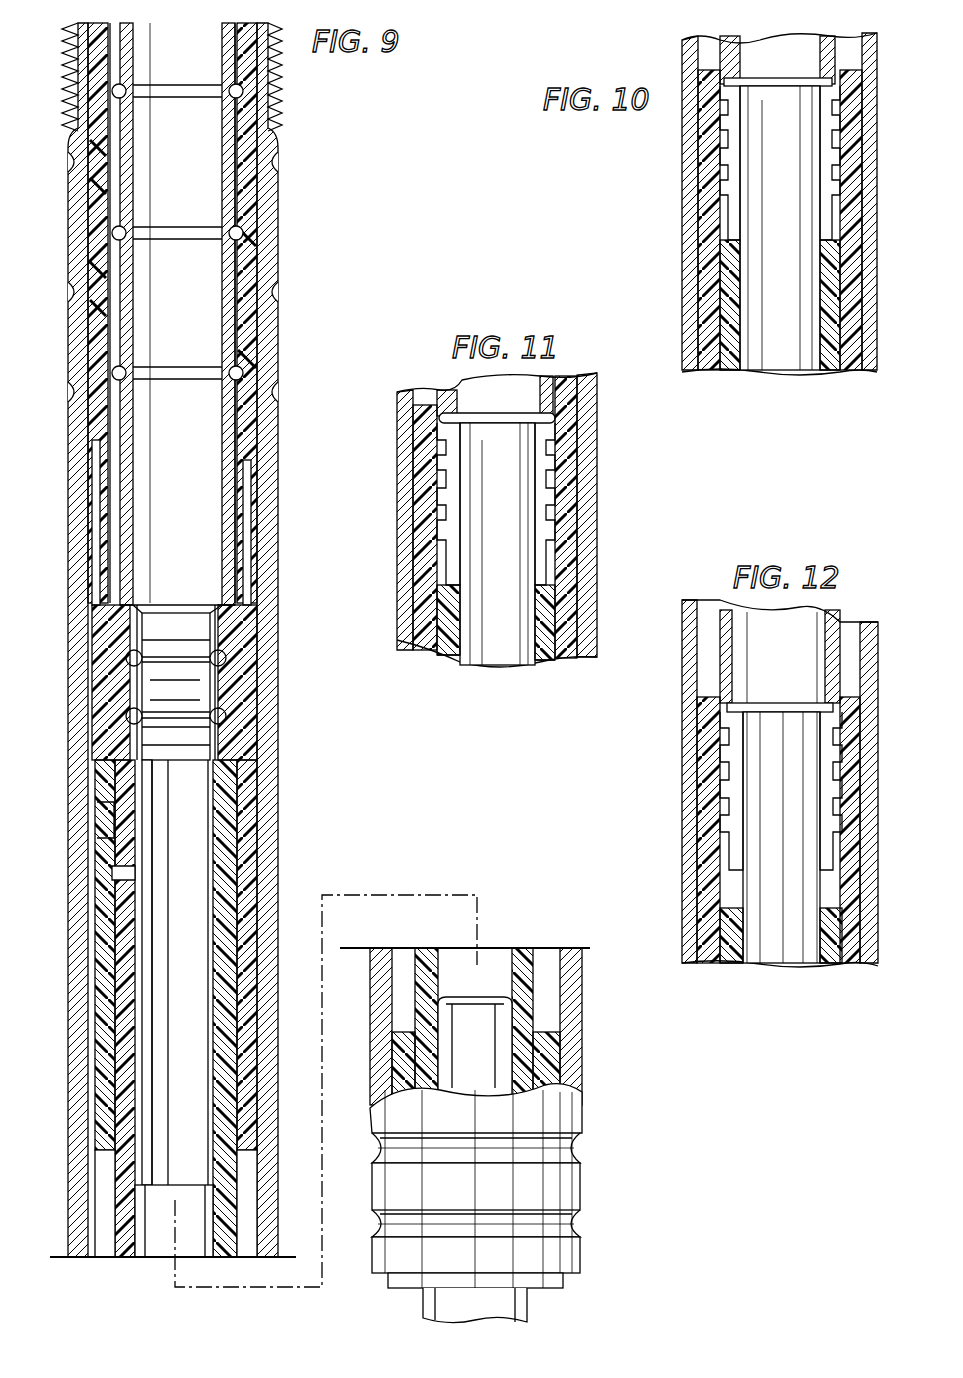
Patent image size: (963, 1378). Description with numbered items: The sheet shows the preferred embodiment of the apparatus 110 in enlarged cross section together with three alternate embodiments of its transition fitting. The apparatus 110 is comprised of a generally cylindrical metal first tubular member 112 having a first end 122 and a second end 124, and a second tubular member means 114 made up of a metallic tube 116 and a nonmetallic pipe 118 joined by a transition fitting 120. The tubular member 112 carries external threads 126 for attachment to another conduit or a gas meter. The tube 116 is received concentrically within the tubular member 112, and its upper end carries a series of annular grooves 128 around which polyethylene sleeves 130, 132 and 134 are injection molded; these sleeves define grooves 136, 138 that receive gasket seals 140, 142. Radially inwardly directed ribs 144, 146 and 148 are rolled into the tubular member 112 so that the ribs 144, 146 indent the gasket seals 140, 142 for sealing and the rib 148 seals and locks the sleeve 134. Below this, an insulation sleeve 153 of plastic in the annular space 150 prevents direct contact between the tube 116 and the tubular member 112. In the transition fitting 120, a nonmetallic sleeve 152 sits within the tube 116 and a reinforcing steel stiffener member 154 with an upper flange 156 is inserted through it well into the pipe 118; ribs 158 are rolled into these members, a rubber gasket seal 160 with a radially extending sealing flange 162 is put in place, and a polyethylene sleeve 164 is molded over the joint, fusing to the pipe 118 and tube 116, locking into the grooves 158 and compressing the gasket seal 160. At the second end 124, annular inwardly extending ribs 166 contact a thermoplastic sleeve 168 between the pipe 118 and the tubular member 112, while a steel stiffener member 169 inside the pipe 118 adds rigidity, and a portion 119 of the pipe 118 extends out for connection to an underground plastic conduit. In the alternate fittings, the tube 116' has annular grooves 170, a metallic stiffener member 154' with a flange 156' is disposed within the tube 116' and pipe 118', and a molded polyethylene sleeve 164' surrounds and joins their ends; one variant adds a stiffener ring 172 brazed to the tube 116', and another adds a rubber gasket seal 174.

In FIG. 9, the apparatus 110 is at (296, 446).
In FIG. 9, the first tubular member 112 is at (268, 510).
In FIG. 10, the first tubular member 112 is at (868, 74).
In FIG. 11, the first tubular member 112 is at (586, 460).
In FIG. 12, the first tubular member 112 is at (866, 838).
In FIG. 9, the second tubular member means 114 is at (90, 604).
In FIG. 9, the metallic tube 116 is at (177, 314).
In FIG. 10, the tube 116' is at (777, 61).
In FIG. 11, the tube 116' is at (544, 399).
In FIG. 12, the tube 116' is at (821, 661).
In FIG. 9, the nonmetallic pipe 118 is at (213, 1008).
In FIG. 10, the pipe 118' is at (780, 379).
In FIG. 11, the pipe 118' is at (522, 675).
In FIG. 12, the pipe 118' is at (794, 987).
In FIG. 9, the portion of pipe 119 is at (515, 1308).
In FIG. 9, the transition fitting 120 is at (82, 858).
In FIG. 9, the first end 122 is at (282, 86).
In FIG. 9, the second end 124 is at (553, 1183).
In FIG. 9, the external threads 126 is at (64, 38).
In FIG. 9, the annular grooves 128 is at (190, 85).
In FIG. 9, the sleeve 130 is at (248, 114).
In FIG. 9, the sleeve 132 is at (260, 236).
In FIG. 9, the sleeve 134 is at (252, 350).
In FIG. 9, the groove 136 is at (98, 150).
In FIG. 9, the groove 138 is at (96, 272).
In FIG. 9, the gasket seal 140 is at (92, 184).
In FIG. 9, the gasket seal 142 is at (92, 308).
In FIG. 9, the rib 144 is at (278, 172).
In FIG. 9, the rib 146 is at (279, 300).
In FIG. 9, the rib 148 is at (280, 385).
In FIG. 9, the annular space 150 is at (100, 456).
In FIG. 9, the nonmetallic sleeve 152 is at (222, 774).
In FIG. 9, the insulation sleeve 153 is at (245, 545).
In FIG. 9, the stiffener member 154 is at (174, 1008).
In FIG. 10, the stiffener member 154' is at (826, 305).
In FIG. 11, the stiffener member 154' is at (544, 615).
In FIG. 12, the stiffener member 154' is at (781, 873).
In FIG. 9, the flange 156 is at (177, 666).
In FIG. 10, the flange 156' is at (780, 227).
In FIG. 11, the flange 156' is at (487, 447).
In FIG. 9, the ribs 158 is at (174, 660).
In FIG. 9, the rubber gasket seal 160 is at (104, 836).
In FIG. 9, the sealing flange 162 is at (118, 862).
In FIG. 9, the sleeve 164 is at (214, 682).
In FIG. 10, the sleeve 164' is at (815, 220).
In FIG. 11, the sleeve 164' is at (532, 517).
In FIG. 12, the sleeve 164' is at (810, 830).
In FIG. 9, the ribs 166 is at (563, 1150).
In FIG. 9, the sleeve 168 is at (548, 1067).
In FIG. 9, the stiffener member 169 is at (500, 1034).
In FIG. 10, the annular grooves 170 is at (838, 148).
In FIG. 11, the annular grooves 170 is at (552, 492).
In FIG. 11, the stiffener ring 172 is at (530, 580).
In FIG. 12, the rubber gasket seal 174 is at (740, 750).